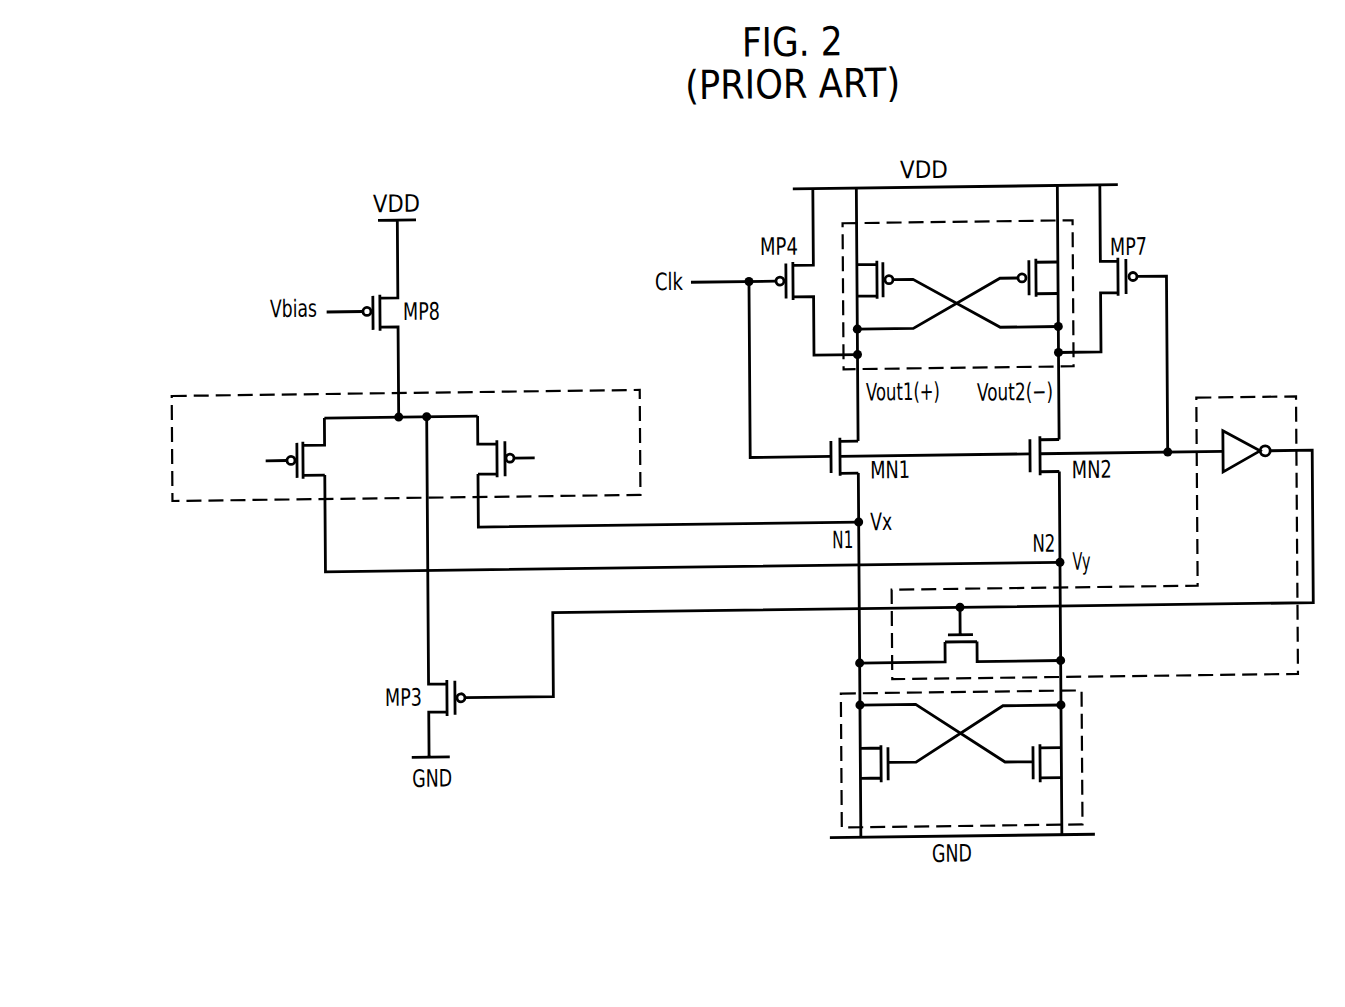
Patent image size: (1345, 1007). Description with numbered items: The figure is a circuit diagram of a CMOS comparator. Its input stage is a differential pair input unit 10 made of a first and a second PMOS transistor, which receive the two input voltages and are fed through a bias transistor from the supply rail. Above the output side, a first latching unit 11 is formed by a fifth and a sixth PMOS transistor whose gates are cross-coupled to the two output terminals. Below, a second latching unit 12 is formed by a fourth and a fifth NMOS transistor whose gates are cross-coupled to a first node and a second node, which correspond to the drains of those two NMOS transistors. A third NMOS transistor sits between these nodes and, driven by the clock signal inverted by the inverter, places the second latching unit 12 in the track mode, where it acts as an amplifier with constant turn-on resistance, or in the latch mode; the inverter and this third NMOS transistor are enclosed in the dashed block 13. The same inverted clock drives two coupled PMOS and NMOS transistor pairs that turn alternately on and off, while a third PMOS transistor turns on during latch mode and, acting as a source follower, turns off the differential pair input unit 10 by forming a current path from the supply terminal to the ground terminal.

The differential pair input unit 10 is at (566, 388).
The first latching unit 11 is at (1000, 224).
The second latching unit 12 is at (1080, 750).
The inverter feedback block (INV, MN3) 13 is at (1247, 404).